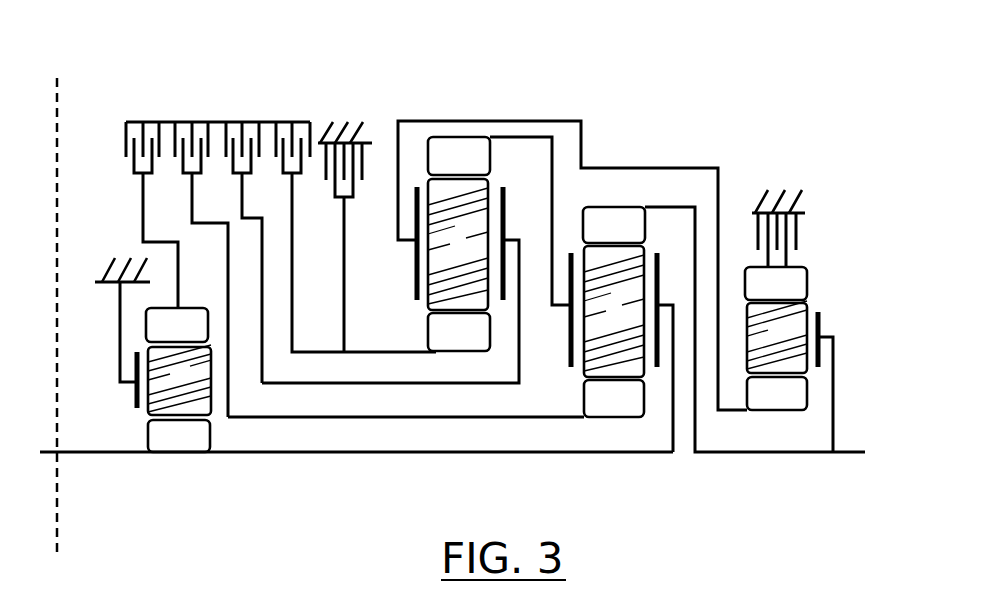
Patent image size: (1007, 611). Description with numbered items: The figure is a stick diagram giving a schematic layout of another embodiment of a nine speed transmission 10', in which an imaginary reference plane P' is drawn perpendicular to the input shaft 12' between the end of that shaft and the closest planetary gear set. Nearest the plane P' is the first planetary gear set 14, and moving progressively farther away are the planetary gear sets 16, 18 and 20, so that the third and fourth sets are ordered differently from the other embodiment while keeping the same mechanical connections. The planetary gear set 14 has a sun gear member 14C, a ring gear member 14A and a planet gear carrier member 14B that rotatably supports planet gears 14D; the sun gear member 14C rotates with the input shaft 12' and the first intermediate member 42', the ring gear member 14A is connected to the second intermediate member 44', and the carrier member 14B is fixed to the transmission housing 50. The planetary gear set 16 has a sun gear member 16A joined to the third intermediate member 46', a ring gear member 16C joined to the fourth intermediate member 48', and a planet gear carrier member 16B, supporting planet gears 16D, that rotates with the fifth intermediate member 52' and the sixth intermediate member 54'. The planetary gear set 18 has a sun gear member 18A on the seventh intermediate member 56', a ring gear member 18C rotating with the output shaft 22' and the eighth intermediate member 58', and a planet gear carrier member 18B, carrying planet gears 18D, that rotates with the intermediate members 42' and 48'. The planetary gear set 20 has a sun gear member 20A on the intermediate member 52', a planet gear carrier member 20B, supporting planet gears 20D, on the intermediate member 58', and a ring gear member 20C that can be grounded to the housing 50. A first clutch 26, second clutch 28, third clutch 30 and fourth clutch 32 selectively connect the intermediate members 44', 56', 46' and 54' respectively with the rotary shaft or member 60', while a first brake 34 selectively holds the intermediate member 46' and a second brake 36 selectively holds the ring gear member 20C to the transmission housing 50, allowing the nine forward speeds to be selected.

The nine speed transmission 10' is at (659, 114).
The input shaft 12' is at (94, 434).
The first planetary gear set 14 is at (159, 403).
The ring gear member 14A is at (177, 325).
The planet gear carrier member 14B is at (135, 402).
The sun gear member 14C is at (179, 436).
The planet gears 14D is at (179, 380).
The second planetary gear set 16 is at (451, 201).
The sun gear member 16A is at (459, 332).
The planet gear carrier member 16B is at (505, 228).
The ring gear member 16C is at (459, 156).
The planet gears 16D is at (458, 244).
The third planetary gear set 18 is at (596, 329).
The sun gear member 18A is at (614, 398).
The planet gear carrier member 18B is at (568, 325).
The ring gear member 18C is at (614, 225).
The planet gears 18D is at (614, 311).
The fourth planetary gear set 20 is at (829, 340).
The sun gear member 20A is at (777, 393).
The planet gear carrier member 20B is at (830, 313).
The ring gear member 20C is at (776, 283).
The planet gears 20D is at (777, 337).
The output shaft 22' is at (821, 429).
The first clutch 26 is at (126, 140).
The second clutch 28 is at (182, 163).
The third clutch 30 is at (303, 163).
The fourth clutch 32 is at (232, 163).
The first brake 34 is at (360, 162).
The second brake 36 is at (758, 240).
The first shaft or intermediate member 42' is at (410, 437).
The second shaft or intermediate member 44' is at (130, 223).
The third shaft or intermediate member 46' is at (323, 274).
The fourth shaft or intermediate member 48' is at (556, 221).
The transmission housing 50 is at (107, 262).
The fifth shaft or intermediate member 52' is at (572, 250).
The sixth shaft or intermediate member 54' is at (390, 311).
The seventh shaft or intermediate member 56' is at (406, 403).
The eighth shaft or intermediate member 58' is at (692, 361).
The rotary shaft or member 60' is at (218, 94).
The imaginary reference plane P' is at (92, 300).